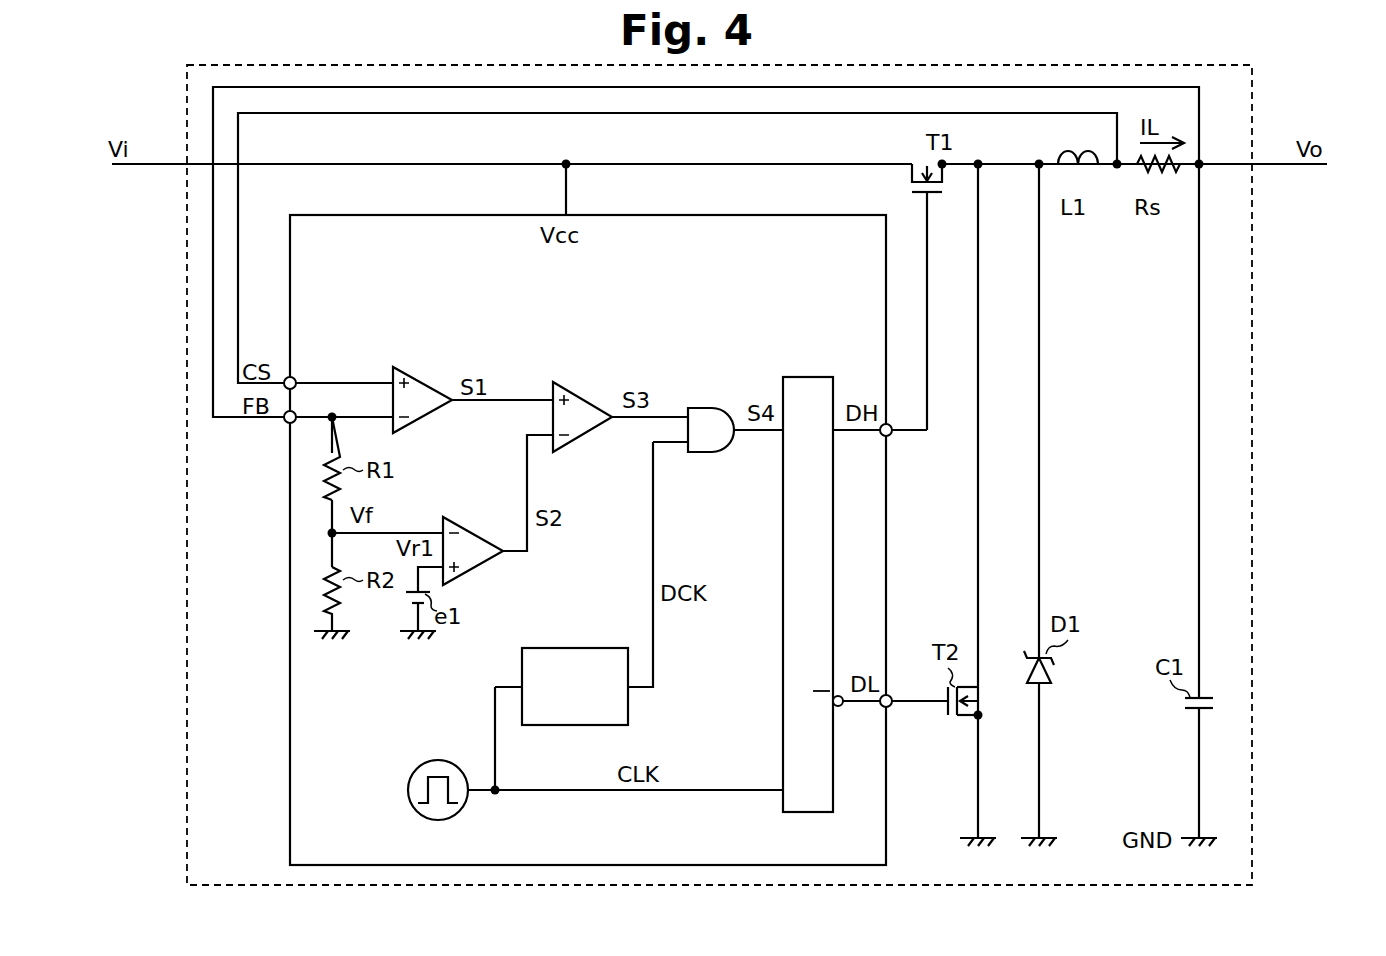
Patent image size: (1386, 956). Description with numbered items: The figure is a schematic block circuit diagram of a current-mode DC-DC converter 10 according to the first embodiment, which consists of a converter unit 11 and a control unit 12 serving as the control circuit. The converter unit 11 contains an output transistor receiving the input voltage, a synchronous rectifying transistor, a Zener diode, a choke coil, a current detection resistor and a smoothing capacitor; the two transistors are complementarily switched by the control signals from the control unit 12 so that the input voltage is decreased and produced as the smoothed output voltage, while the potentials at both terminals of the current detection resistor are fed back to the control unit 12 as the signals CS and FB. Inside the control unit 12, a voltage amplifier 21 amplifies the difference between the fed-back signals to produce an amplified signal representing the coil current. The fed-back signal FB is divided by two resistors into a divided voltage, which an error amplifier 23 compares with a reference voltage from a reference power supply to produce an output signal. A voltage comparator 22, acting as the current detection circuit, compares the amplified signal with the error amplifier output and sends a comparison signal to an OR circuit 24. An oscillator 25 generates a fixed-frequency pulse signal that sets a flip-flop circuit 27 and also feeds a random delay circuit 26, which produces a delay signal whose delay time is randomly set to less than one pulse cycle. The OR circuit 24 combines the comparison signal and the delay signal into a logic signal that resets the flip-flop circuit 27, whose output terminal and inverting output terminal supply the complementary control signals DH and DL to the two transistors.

The DC-DC converter 10 is at (1253, 74).
The converter unit 11 is at (892, 153).
The control unit 12 is at (818, 213).
The voltage amplifier 21 is at (430, 357).
The voltage comparator 22 is at (590, 377).
The error amplifier 23 is at (462, 519).
The OR circuit 24 is at (698, 407).
The oscillator 25 is at (439, 761).
The random delay circuit 26 is at (595, 647).
The flip-flop circuit 27 is at (798, 376).